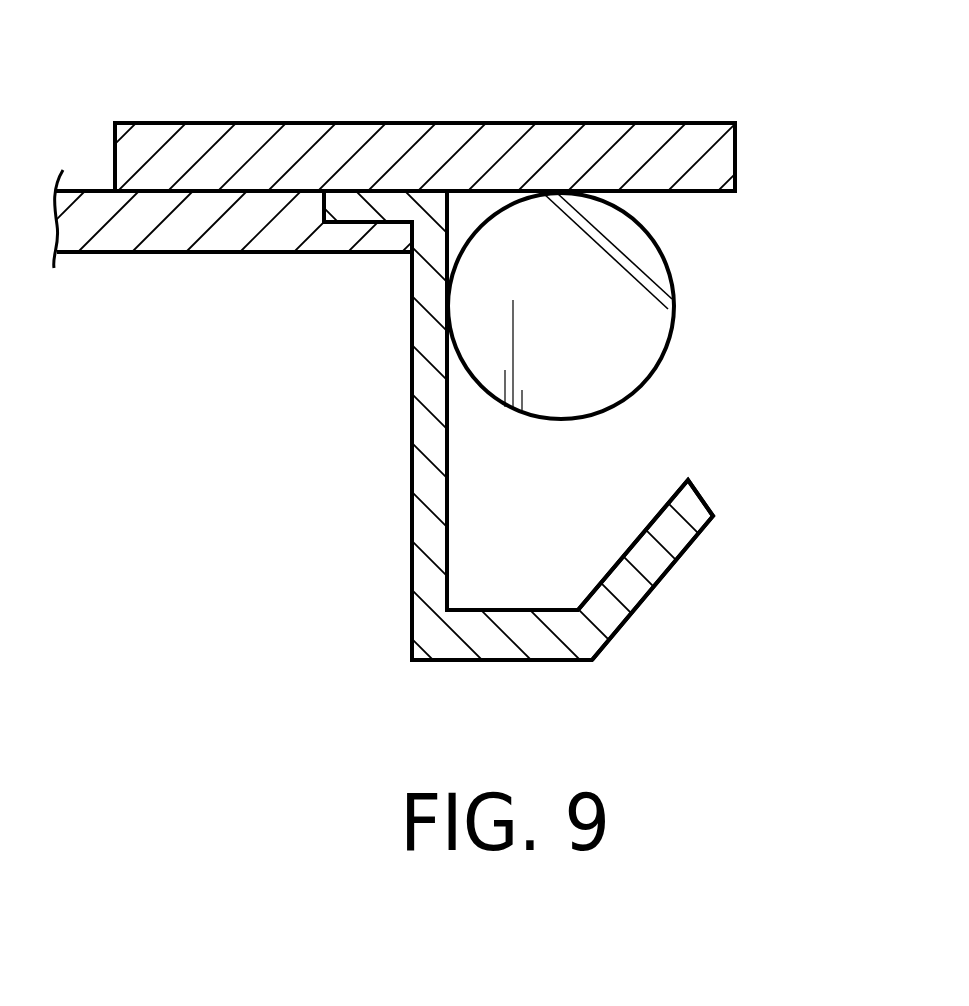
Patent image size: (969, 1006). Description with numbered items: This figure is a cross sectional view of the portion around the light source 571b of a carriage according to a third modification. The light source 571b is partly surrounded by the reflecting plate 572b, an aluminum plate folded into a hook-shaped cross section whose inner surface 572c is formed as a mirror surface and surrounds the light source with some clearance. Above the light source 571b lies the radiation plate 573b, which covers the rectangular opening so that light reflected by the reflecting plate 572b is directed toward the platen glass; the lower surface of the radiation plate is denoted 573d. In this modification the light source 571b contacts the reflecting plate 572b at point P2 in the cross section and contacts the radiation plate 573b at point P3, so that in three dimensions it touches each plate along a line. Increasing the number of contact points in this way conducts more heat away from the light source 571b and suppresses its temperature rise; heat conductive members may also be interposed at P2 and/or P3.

The radiation plate 573b is at (632, 142).
The lower surface of guide rail 573d is at (685, 193).
The light source 571b is at (608, 353).
The inner surface 572c is at (447, 453).
The reflecting plate 572b is at (648, 558).
The contact point P2 is at (447, 302).
The contact point P3 is at (563, 193).